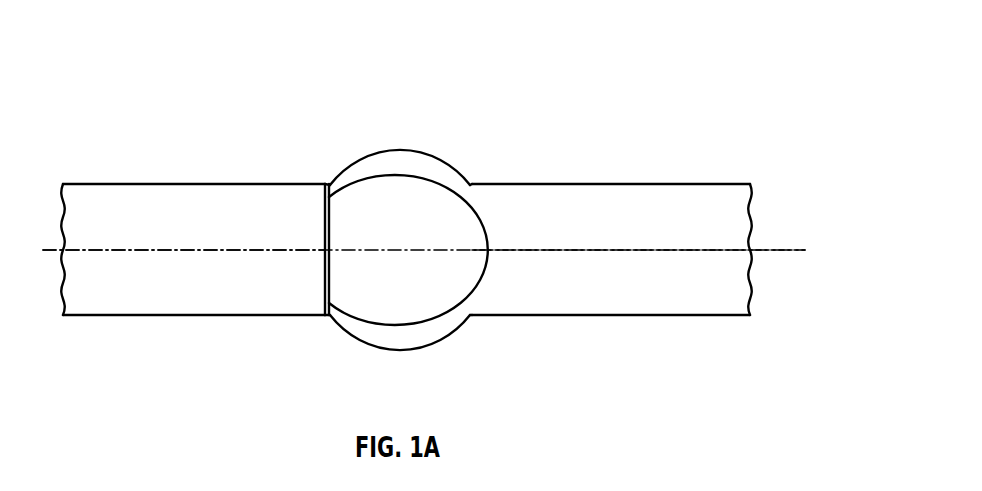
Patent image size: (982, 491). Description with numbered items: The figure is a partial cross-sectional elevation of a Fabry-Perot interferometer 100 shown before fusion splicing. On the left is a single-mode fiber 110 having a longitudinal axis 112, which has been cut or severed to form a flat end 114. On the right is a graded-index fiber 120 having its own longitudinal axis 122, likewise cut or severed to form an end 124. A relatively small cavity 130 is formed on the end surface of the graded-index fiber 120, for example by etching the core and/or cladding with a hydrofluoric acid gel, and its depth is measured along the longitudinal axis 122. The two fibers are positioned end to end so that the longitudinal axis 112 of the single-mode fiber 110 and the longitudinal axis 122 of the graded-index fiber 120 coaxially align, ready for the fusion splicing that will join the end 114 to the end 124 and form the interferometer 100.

The Fabry-Perot interferometer 100 is at (868, 53).
The single-mode fiber 110 is at (141, 315).
The longitudinal axis 112 is at (153, 250).
The end 114 is at (323, 206).
The graded-index fiber 120 is at (632, 316).
The longitudinal axis 122 is at (636, 250).
The end 124 is at (334, 200).
The relatively small cavity 130 is at (418, 262).